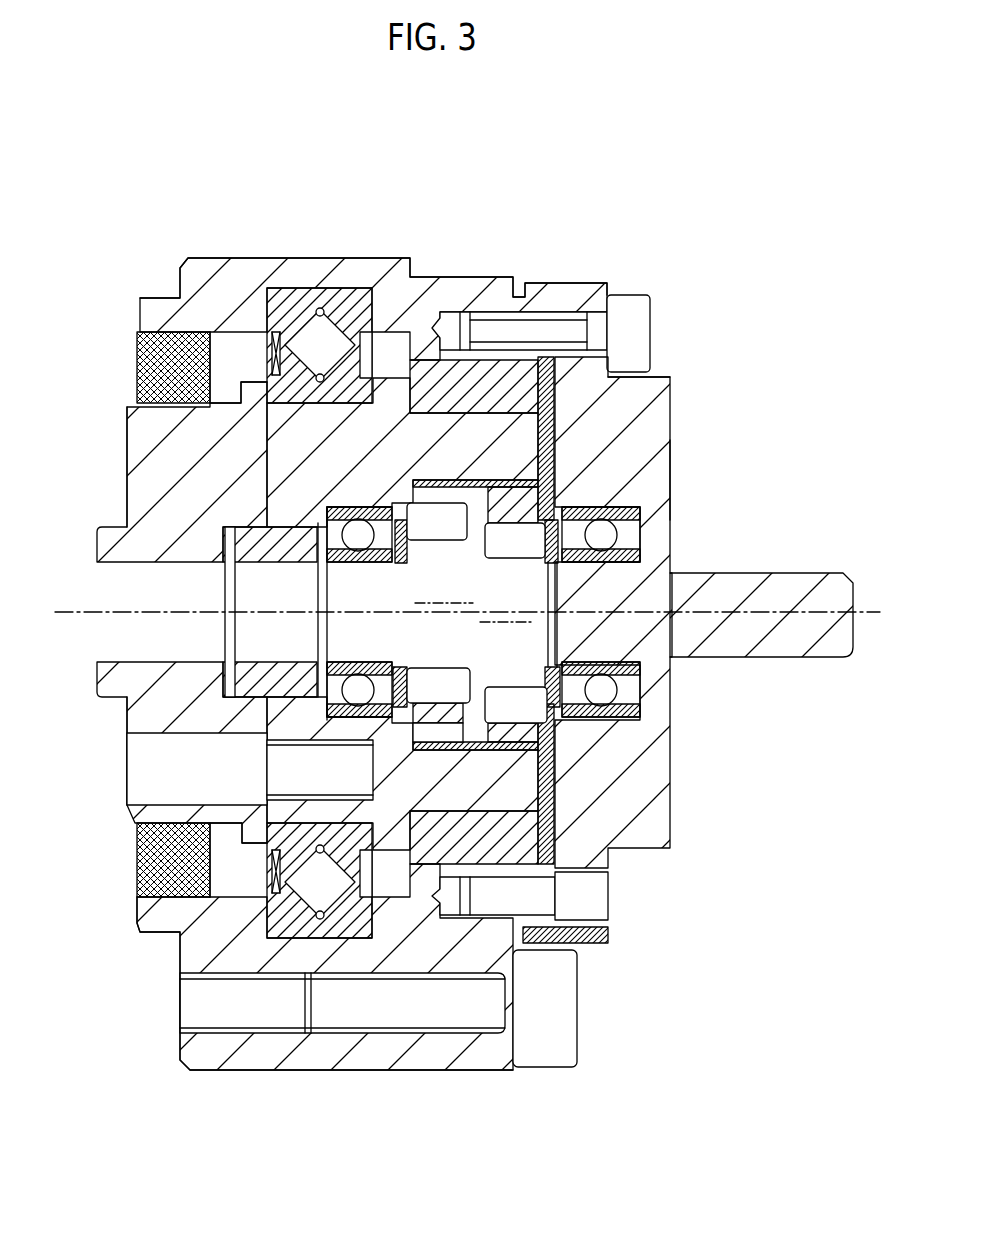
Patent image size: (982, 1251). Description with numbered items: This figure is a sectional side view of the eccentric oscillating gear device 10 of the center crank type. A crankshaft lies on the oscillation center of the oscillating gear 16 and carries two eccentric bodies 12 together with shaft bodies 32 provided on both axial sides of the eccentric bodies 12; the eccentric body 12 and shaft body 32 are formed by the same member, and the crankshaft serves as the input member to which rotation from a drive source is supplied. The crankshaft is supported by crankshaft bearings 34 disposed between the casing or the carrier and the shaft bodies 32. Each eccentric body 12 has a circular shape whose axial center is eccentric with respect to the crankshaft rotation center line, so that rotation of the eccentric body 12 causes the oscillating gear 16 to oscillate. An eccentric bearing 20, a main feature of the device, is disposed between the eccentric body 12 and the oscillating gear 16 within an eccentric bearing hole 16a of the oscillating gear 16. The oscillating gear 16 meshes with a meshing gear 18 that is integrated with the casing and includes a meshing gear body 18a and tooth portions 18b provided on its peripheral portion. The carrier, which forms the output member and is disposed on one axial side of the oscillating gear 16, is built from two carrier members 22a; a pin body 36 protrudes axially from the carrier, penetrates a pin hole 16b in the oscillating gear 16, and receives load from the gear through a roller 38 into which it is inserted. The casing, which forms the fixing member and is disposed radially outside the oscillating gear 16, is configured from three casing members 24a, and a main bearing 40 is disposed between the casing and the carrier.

The eccentric oscillating gear device 10 is at (92, 185).
The casing member 24a is at (240, 257).
The main bearing 40 is at (322, 288).
The meshing gear body 18a is at (455, 345).
The oscillating gear 16 is at (441, 360).
The meshing gear 18 is at (476, 350).
The tooth portion 18b is at (556, 380).
The roller 38 is at (556, 408).
The pin body 36 is at (556, 447).
The carrier member 22a is at (288, 495).
The eccentric bearing hole 16a is at (433, 479).
The shaft body 32 is at (340, 555).
The eccentric body 12 is at (452, 542).
The eccentric bearing 20 is at (536, 575).
The crankshaft bearing 34 is at (268, 712).
The pin hole 16b is at (420, 780).